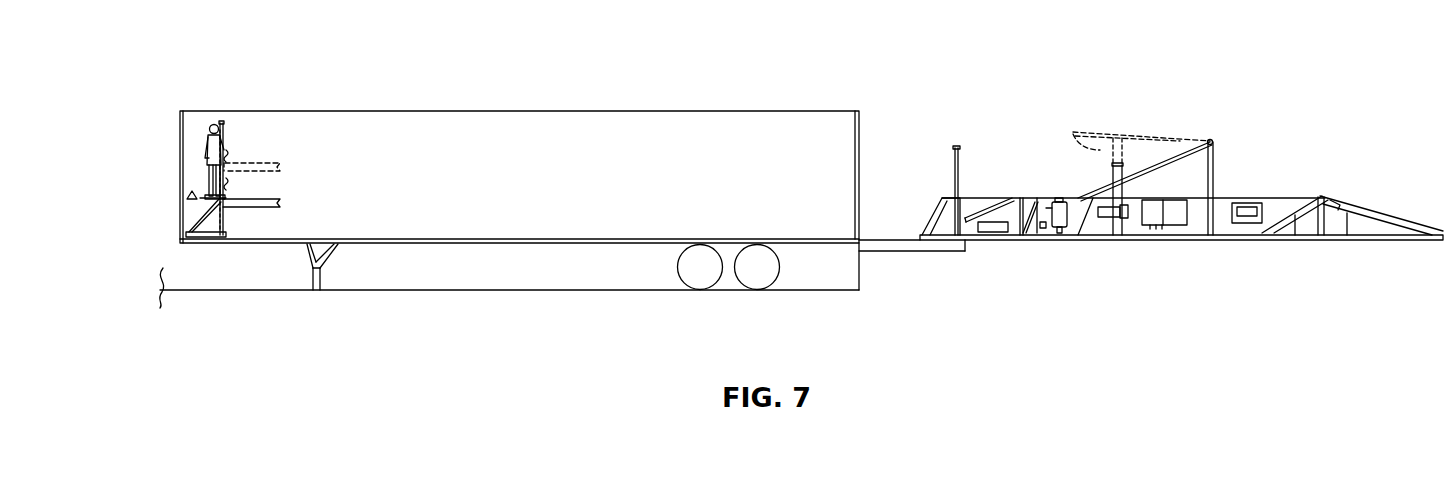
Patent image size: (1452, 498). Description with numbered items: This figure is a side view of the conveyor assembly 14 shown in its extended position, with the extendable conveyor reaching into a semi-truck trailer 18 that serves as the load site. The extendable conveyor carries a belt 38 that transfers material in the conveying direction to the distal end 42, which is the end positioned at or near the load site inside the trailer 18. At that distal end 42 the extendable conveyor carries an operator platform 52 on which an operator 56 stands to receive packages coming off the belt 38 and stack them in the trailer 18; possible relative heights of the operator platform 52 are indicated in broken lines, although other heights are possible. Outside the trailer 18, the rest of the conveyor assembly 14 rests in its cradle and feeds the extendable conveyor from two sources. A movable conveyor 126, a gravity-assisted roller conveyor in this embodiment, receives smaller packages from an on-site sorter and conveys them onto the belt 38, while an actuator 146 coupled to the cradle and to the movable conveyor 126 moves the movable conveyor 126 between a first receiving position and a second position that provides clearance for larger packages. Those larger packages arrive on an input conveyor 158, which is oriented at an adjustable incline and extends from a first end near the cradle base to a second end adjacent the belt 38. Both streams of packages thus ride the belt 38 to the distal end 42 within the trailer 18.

The conveyor assembly 14 is at (1315, 80).
The semi-truck trailer 18 is at (526, 110).
The belt 38 is at (1040, 196).
The distal end 42 is at (165, 231).
The operator platform 52 is at (195, 194).
The operator 56 is at (206, 141).
The movable conveyor 126 is at (1160, 158).
The actuator 146 is at (1082, 130).
The input conveyor 158 is at (1375, 208).